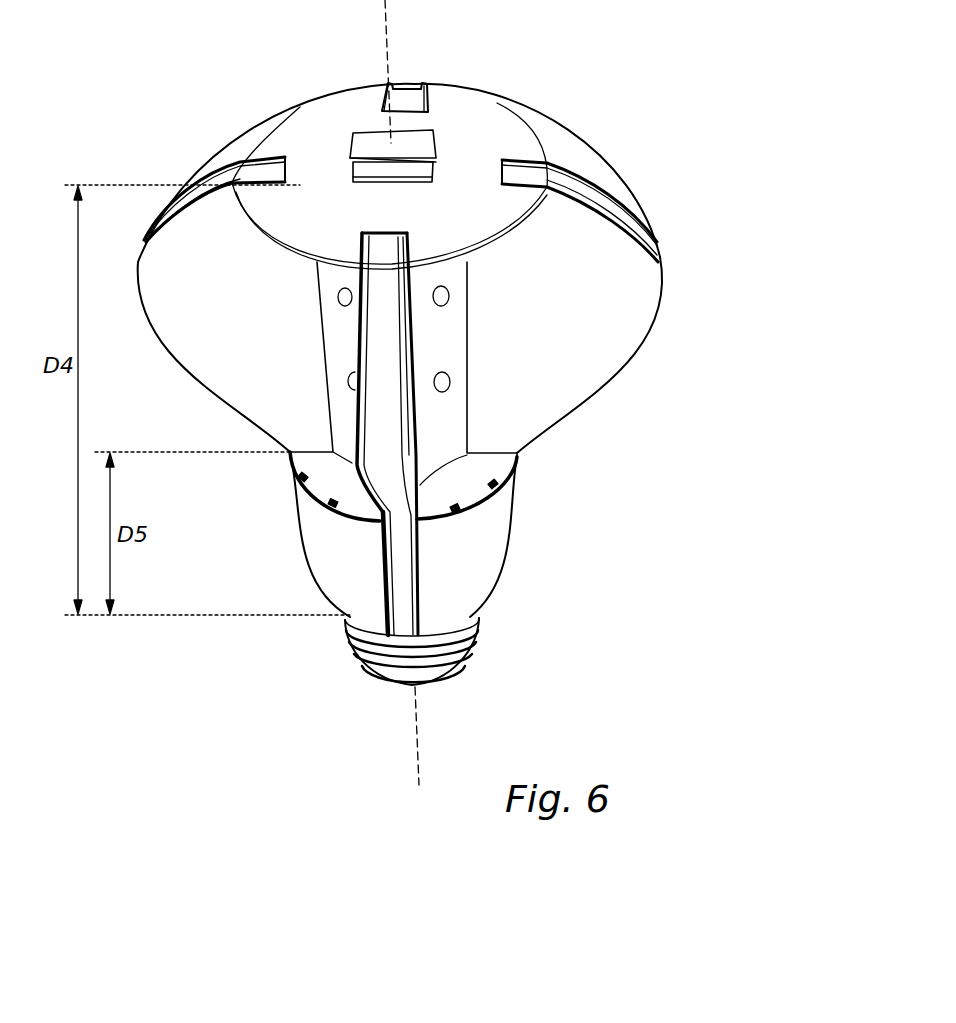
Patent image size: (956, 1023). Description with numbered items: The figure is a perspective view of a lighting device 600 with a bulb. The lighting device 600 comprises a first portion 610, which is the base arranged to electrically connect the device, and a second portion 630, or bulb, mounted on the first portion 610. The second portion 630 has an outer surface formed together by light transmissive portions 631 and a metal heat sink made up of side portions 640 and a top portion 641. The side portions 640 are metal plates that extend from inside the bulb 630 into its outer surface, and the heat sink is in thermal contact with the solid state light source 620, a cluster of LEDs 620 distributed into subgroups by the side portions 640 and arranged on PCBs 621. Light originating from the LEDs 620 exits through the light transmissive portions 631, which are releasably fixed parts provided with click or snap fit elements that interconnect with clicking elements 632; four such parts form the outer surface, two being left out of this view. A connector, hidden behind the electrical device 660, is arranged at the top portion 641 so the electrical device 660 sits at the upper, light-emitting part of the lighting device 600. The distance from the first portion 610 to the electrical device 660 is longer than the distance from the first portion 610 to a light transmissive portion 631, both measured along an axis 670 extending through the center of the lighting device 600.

The lighting device 600 is at (243, 632).
The first portion 610 is at (465, 648).
The solid state light source 620 is at (340, 297).
The PCBs 621 is at (324, 270).
The second portion 630 is at (713, 145).
The light transmissive portion 631 is at (577, 153).
The clicking elements 632 is at (460, 517).
The side portions 640 is at (202, 188).
The top portion 641 is at (297, 143).
The electrical device 660 is at (370, 142).
The axis 670 is at (388, 13).